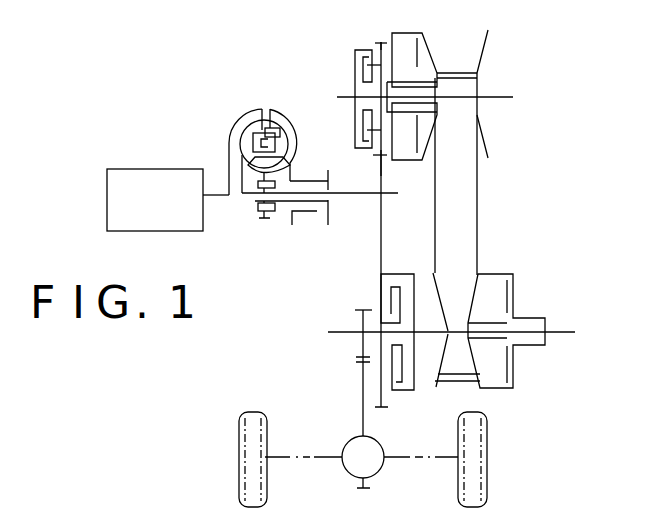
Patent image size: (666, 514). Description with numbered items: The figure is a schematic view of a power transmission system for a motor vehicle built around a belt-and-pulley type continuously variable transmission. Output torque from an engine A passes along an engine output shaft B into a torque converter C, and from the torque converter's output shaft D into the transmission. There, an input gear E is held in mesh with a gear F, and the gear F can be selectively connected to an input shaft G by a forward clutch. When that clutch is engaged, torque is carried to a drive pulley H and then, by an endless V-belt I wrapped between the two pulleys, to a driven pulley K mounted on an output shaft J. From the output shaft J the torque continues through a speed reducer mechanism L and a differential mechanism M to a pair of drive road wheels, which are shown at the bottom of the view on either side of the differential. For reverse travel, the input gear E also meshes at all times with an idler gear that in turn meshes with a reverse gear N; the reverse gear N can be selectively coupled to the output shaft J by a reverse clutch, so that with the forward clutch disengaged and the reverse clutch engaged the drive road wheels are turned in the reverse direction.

The engine A is at (136, 167).
The engine output shaft B is at (217, 189).
The torque converter C is at (246, 101).
The output shaft of torque converter D is at (355, 202).
The input gear E is at (373, 168).
The gear F is at (358, 38).
The input shaft G is at (342, 90).
The drive pulley H is at (499, 55).
The endless V-belt I is at (451, 188).
The output shaft J is at (339, 329).
The driven pulley K is at (524, 392).
The speed reducer mechanism L is at (346, 361).
The differential mechanism M is at (346, 436).
The reverse gear N is at (405, 404).